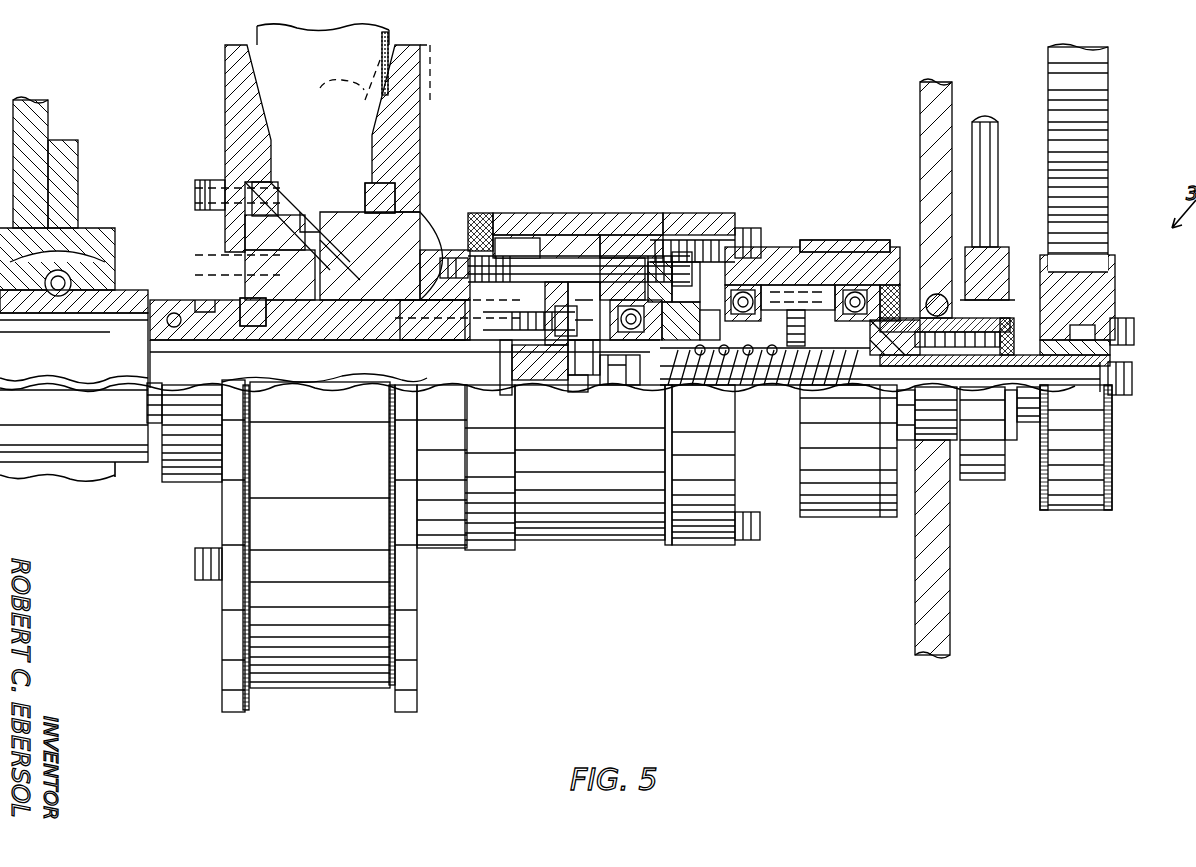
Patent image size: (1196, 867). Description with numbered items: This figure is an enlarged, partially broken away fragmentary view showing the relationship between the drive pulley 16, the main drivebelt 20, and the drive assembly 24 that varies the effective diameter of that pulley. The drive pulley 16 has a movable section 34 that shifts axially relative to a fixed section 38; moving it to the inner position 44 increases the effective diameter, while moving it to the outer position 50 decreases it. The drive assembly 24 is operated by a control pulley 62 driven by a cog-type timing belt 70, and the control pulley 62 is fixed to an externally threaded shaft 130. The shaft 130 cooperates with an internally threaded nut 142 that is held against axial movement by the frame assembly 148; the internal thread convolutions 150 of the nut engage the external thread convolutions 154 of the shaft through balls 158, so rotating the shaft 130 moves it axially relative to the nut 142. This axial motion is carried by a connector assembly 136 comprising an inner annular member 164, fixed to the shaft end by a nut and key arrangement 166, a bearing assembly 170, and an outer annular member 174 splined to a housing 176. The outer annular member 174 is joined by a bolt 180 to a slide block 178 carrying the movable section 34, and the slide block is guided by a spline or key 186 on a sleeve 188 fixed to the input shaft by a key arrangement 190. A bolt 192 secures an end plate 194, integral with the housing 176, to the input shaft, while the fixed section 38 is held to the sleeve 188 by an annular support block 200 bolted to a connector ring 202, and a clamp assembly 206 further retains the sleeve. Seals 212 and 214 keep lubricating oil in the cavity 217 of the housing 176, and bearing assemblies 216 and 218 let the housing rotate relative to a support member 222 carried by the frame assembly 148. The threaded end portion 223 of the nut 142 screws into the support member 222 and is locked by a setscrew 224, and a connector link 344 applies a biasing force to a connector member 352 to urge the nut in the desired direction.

The drive pulley 16 is at (197, 651).
The main drivebelt 20 is at (394, 59).
The drive assembly 24 is at (717, 582).
The movable pulley section 34 is at (412, 117).
The fixed pulley section 38 is at (229, 119).
The inner position 44 is at (350, 80).
The outer position 50 is at (432, 82).
The control pulley 62 is at (1100, 278).
The timing belt 70 is at (1100, 162).
The externally threaded shaft 130 is at (866, 381).
The connector assembly 136 is at (661, 384).
The internally threaded nut 142 is at (803, 270).
The frame assembly 148 is at (950, 630).
The internal thread convolutions 150 is at (740, 385).
The external thread convolutions 154 is at (722, 386).
The balls 158 is at (703, 354).
The inner annular member 164 is at (608, 352).
The nut and key arrangement 166 is at (634, 376).
The bearing assembly 170 is at (644, 322).
The outer annular member 174 is at (618, 267).
The housing 176 is at (596, 231).
The slide block 178 is at (432, 235).
The bolt 180 is at (553, 261).
The spline or key 186 is at (422, 262).
The sleeve 188 is at (452, 312).
The key arrangement 190 is at (375, 379).
The bolt 192 is at (578, 378).
The end plate 194 is at (530, 352).
The annular support block 200 is at (259, 230).
The connector ring 202 is at (344, 320).
The clamp assembly 206 is at (196, 480).
The seal 212 is at (484, 215).
The seal 214 is at (903, 322).
The bearing assembly 216 is at (754, 340).
The cavity 217 is at (702, 257).
The bearing assembly 218 is at (845, 274).
The support member 222 is at (905, 323).
The threaded end portion 223 is at (812, 335).
The setscrew 224 is at (798, 297).
The connector link 344 is at (996, 150).
The connector member 352 is at (974, 480).